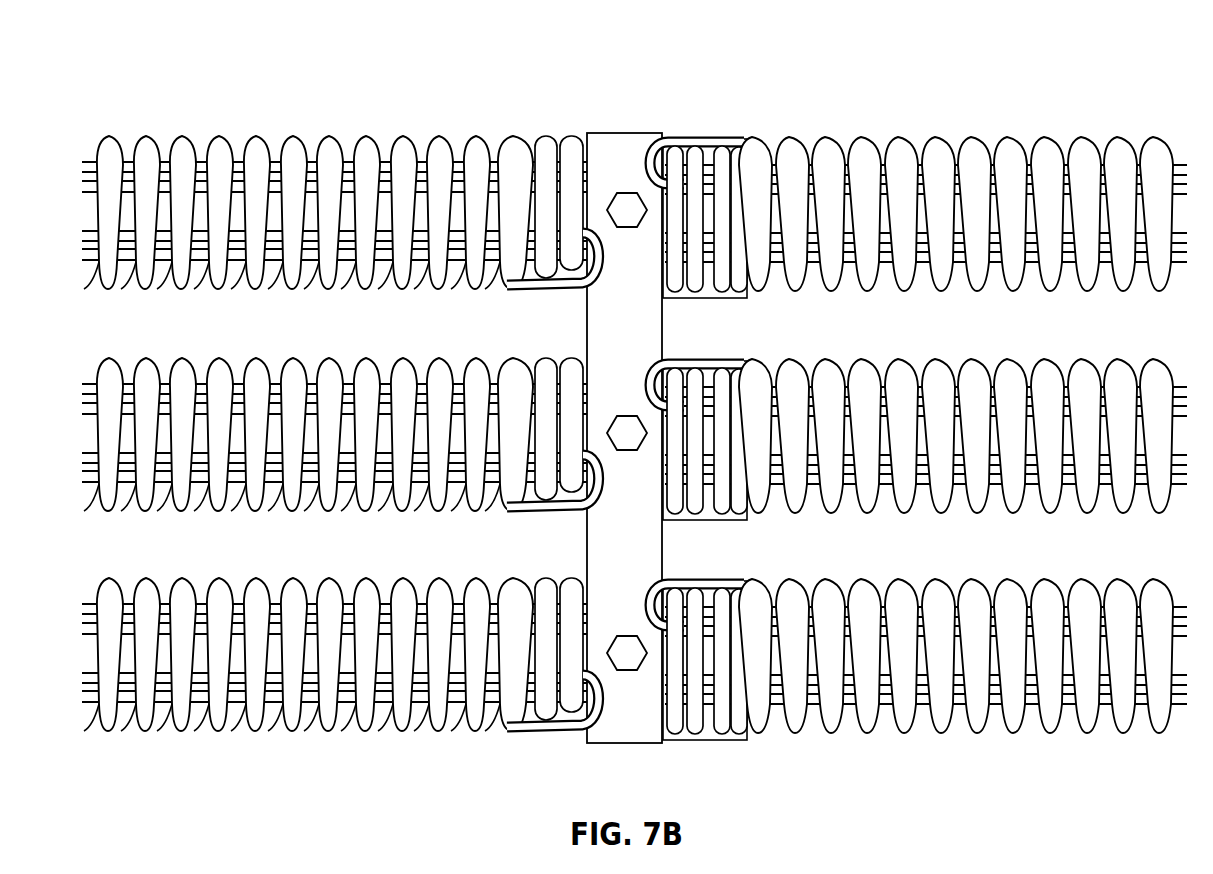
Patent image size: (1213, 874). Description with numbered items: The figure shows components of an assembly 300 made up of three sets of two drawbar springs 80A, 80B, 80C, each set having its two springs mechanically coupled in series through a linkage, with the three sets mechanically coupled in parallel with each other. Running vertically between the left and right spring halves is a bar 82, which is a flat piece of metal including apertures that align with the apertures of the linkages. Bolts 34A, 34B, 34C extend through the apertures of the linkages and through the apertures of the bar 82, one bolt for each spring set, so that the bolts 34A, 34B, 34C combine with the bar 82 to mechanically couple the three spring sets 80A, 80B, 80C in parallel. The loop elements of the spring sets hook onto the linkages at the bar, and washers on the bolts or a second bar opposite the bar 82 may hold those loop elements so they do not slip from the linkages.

The assembly 300 is at (199, 74).
The set of two drawbar springs 80A is at (58, 144).
The set of two drawbar springs 80B is at (68, 384).
The set of two drawbar springs 80C is at (62, 602).
The bolt 34A is at (628, 203).
The bolt 34B is at (628, 424).
The bolt 34C is at (627, 648).
The bar 82 is at (633, 341).